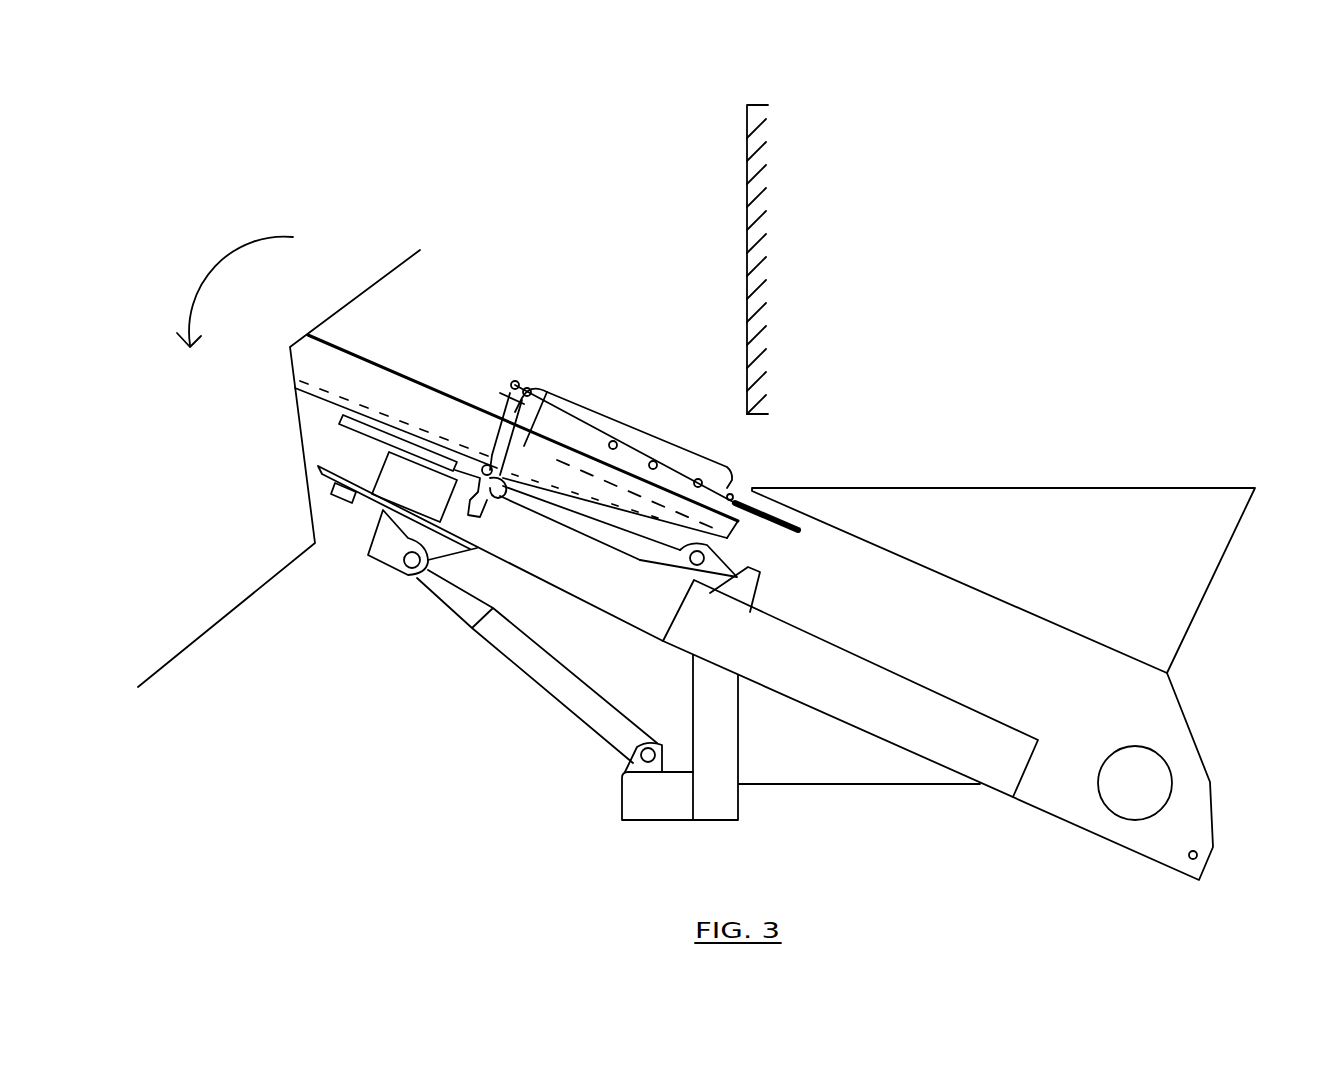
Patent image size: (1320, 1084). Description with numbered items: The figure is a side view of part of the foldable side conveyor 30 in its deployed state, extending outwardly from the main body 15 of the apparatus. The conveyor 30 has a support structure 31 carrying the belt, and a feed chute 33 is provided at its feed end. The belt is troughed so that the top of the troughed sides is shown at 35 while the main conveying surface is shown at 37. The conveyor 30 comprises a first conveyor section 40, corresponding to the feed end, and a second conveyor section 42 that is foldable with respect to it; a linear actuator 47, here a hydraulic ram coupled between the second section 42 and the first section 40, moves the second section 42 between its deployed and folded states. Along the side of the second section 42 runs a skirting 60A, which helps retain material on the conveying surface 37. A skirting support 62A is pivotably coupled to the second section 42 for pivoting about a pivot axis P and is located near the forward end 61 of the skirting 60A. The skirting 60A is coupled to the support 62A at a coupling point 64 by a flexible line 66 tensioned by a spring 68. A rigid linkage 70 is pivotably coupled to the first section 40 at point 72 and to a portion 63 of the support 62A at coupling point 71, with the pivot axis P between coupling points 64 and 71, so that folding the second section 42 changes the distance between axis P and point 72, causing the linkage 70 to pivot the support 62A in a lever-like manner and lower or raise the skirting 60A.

The main body 15 is at (747, 138).
The side conveyor 30 is at (588, 230).
The support structure 31 is at (320, 448).
The feed chute 33 is at (1187, 594).
The top of the troughed sides 35 is at (386, 367).
The conveying surface 37 is at (326, 388).
The first conveyor section 40 is at (1177, 742).
The second conveyor section 42 is at (635, 608).
The linear actuator 47 is at (493, 632).
The skirting 60A is at (647, 440).
The forward end 61 is at (535, 425).
The skirting support 62A is at (483, 400).
The portion 63 is at (500, 503).
The coupling point 64 is at (507, 377).
The flexible line 66 is at (590, 440).
The spring 68 is at (343, 498).
The linkage 70 is at (580, 528).
The coupling point 71 is at (491, 494).
The point 72 is at (748, 584).
The pivot axis P is at (480, 462).